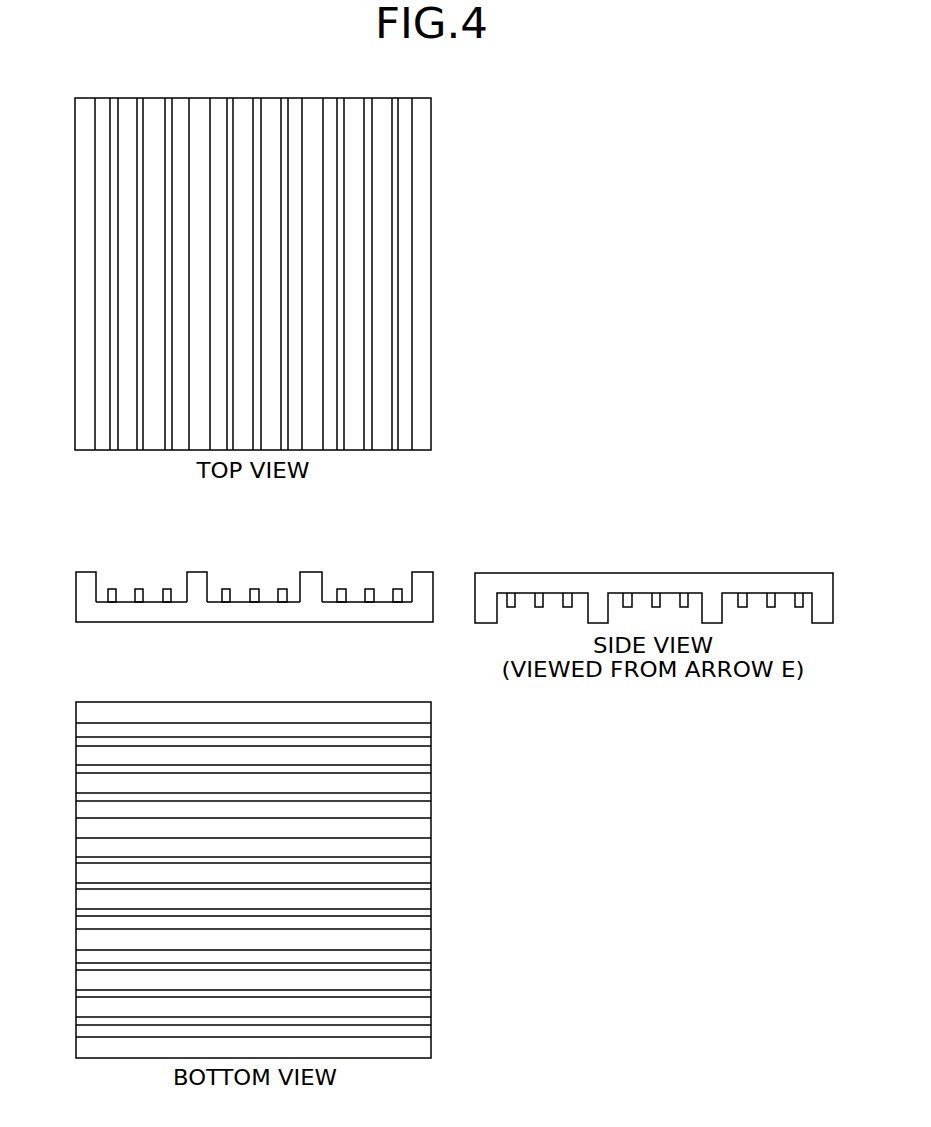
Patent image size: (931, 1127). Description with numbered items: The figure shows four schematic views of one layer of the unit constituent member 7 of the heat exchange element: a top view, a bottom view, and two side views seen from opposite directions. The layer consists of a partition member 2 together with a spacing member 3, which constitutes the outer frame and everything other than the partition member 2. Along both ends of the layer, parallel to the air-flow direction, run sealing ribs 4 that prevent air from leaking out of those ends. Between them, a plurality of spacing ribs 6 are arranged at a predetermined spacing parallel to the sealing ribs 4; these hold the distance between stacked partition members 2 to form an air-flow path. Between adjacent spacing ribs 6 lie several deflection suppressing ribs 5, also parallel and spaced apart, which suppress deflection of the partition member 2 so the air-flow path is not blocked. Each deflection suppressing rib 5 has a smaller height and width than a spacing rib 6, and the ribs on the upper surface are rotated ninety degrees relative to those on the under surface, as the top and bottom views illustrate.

The partition member 2 is at (357, 602).
The spacing member 3 is at (440, 537).
The sealing rib 4 is at (424, 579).
The deflection suppressing rib 5 is at (259, 589).
The spacing rib 6 is at (310, 580).
The unit constituent member 7 is at (35, 568).